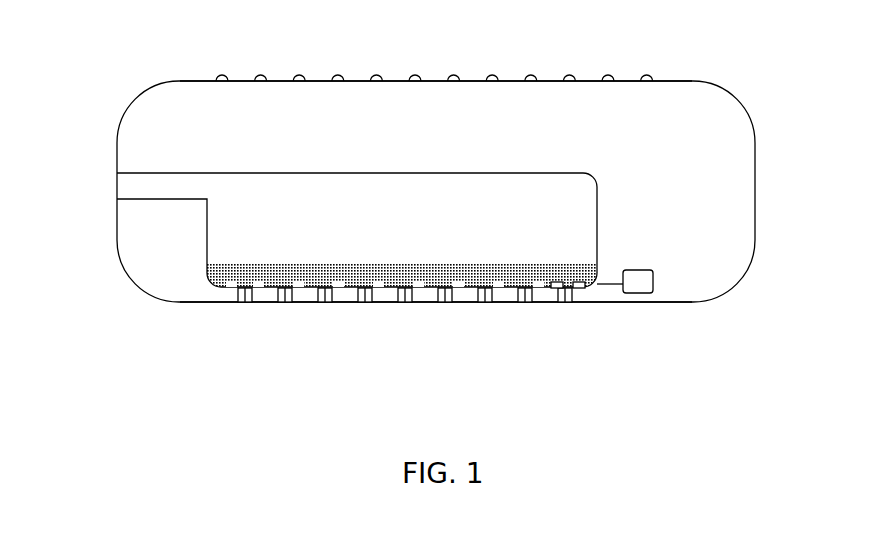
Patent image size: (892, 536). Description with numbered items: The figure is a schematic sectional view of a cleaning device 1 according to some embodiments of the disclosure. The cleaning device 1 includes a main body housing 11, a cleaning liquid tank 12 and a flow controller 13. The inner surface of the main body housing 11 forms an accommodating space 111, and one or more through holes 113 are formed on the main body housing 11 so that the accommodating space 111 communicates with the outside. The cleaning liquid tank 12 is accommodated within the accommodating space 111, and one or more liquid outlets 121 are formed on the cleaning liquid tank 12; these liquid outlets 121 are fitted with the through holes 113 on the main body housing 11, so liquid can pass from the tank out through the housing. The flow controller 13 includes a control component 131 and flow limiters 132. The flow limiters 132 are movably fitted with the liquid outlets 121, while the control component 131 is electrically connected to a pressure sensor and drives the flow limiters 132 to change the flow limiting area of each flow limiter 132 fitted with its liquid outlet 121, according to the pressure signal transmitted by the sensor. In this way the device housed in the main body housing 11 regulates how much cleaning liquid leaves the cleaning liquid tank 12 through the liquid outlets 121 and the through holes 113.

The cleaning device 1 is at (101, 77).
The main body housing 11 is at (712, 83).
The accommodating space 111 is at (465, 135).
The through holes 113 is at (445, 303).
The cleaning liquid tank 12 is at (247, 230).
The liquid outlets 121 is at (450, 305).
The flow controller 13 is at (762, 365).
The control component 131 is at (654, 272).
The flow limiters 132 is at (556, 290).